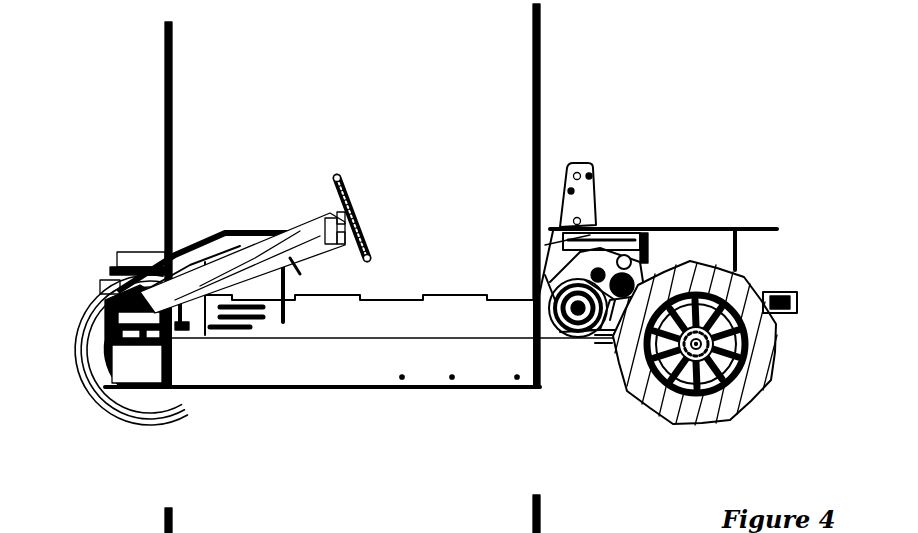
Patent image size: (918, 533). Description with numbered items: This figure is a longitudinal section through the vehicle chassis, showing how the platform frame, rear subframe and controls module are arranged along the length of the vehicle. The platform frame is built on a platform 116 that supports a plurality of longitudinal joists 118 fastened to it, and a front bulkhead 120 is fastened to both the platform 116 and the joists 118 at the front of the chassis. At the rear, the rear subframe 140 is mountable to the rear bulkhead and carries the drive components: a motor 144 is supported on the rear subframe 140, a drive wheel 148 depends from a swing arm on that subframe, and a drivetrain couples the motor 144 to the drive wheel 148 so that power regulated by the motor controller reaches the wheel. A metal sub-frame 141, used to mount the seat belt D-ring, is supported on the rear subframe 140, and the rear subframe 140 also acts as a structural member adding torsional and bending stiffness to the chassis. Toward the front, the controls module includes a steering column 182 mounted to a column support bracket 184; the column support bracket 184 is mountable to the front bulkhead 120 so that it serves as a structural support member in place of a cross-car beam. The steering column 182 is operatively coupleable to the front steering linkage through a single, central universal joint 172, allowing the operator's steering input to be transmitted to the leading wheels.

The platform 116 is at (368, 410).
The longitudinal joists 118 is at (383, 373).
The front bulkhead 120 is at (300, 274).
The rear subframe 140 is at (612, 210).
The metal sub-frame 141 is at (604, 154).
The motor 144 is at (580, 337).
The drive wheel 148 is at (764, 410).
The universal joint 172 is at (103, 278).
The steering column 182 is at (295, 210).
The column support bracket 184 is at (218, 230).